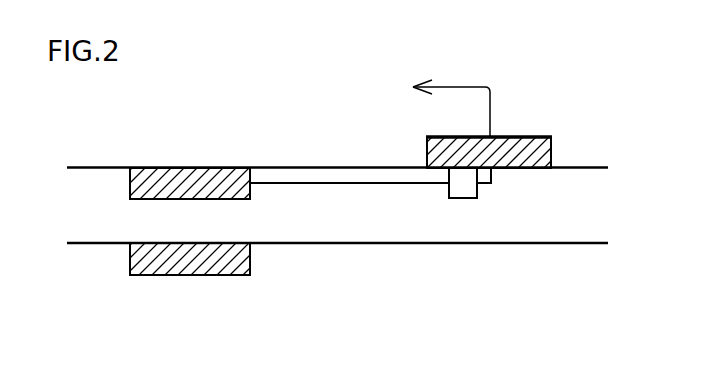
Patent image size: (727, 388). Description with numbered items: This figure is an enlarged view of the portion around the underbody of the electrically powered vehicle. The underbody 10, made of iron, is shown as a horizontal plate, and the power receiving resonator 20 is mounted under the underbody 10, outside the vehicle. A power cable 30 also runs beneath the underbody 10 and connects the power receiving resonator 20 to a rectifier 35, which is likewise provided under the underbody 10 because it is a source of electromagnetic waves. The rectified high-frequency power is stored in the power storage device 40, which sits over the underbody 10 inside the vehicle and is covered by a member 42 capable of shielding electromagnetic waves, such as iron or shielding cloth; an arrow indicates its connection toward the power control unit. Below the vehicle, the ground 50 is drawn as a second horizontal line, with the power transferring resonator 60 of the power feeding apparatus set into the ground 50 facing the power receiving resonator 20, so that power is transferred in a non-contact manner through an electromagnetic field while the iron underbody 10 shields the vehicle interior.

The underbody 10 is at (93, 166).
The power receiving resonator 20 is at (187, 178).
The power cable 30 is at (340, 184).
The rectifier 35 is at (463, 198).
The power storage device 40 is at (518, 148).
The member 42 is at (543, 136).
The ground 50 is at (95, 245).
The power transferring resonator 60 is at (187, 276).